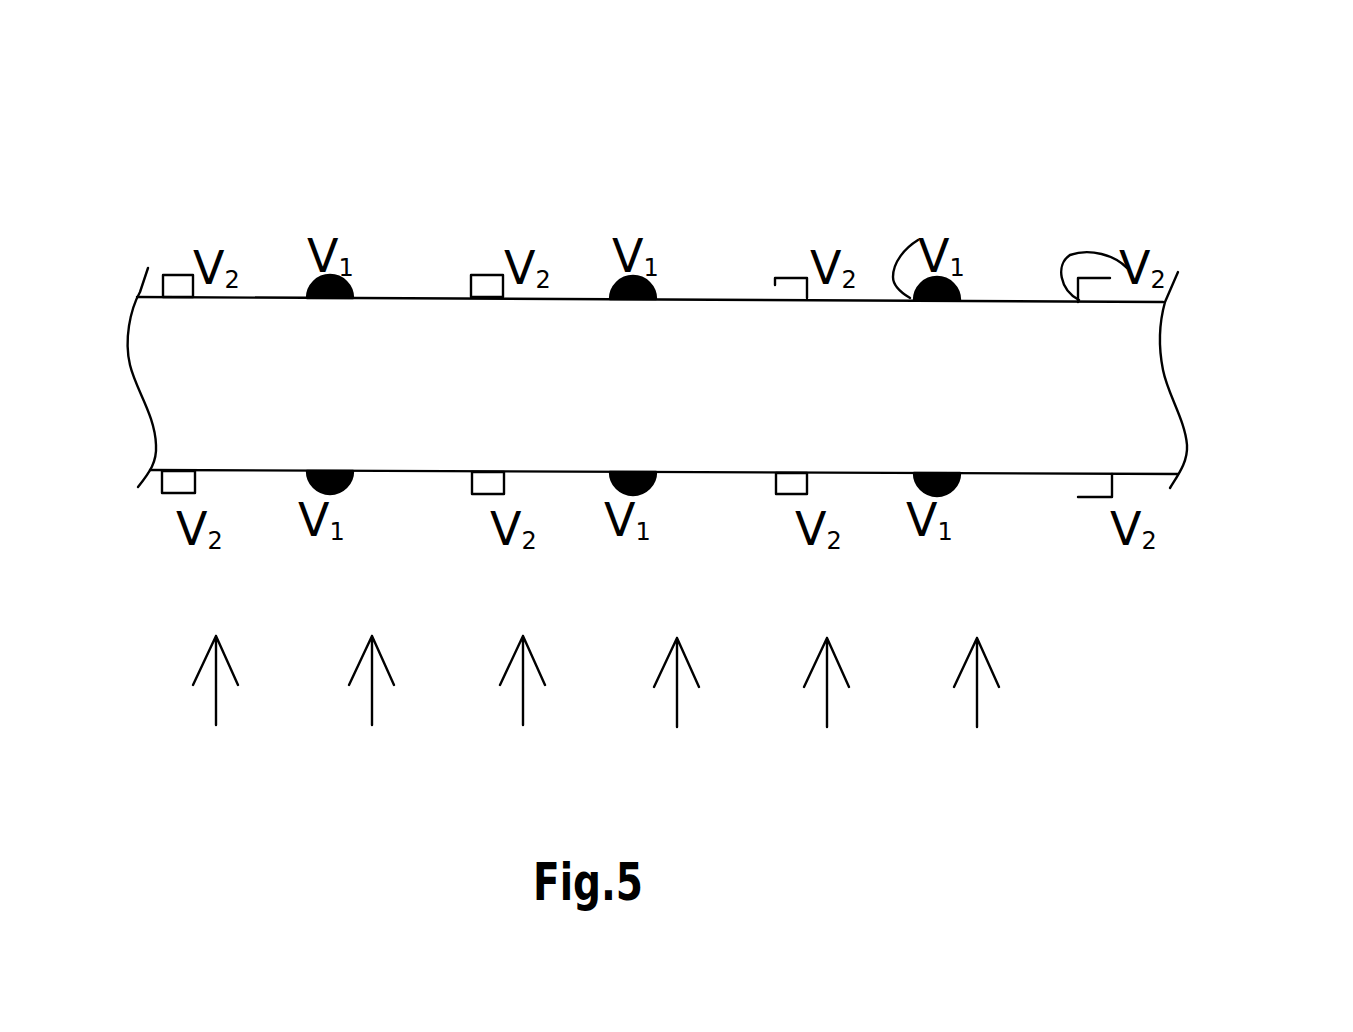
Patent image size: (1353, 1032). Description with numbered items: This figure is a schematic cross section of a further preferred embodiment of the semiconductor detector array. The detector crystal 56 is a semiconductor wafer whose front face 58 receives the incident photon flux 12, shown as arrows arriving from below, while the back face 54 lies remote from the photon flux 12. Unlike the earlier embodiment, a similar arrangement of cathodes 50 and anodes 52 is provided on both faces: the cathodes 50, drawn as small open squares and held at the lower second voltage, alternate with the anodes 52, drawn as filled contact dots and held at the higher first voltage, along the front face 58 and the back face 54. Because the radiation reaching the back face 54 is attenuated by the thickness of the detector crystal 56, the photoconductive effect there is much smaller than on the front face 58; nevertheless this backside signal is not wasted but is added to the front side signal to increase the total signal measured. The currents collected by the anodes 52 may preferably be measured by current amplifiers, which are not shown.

The photon flux 12 is at (596, 711).
The cathodes 50 is at (180, 272).
The anodes 52 is at (350, 285).
The back face 54 is at (1017, 300).
The detector crystal 56 is at (1095, 392).
The front face 58 is at (1025, 475).